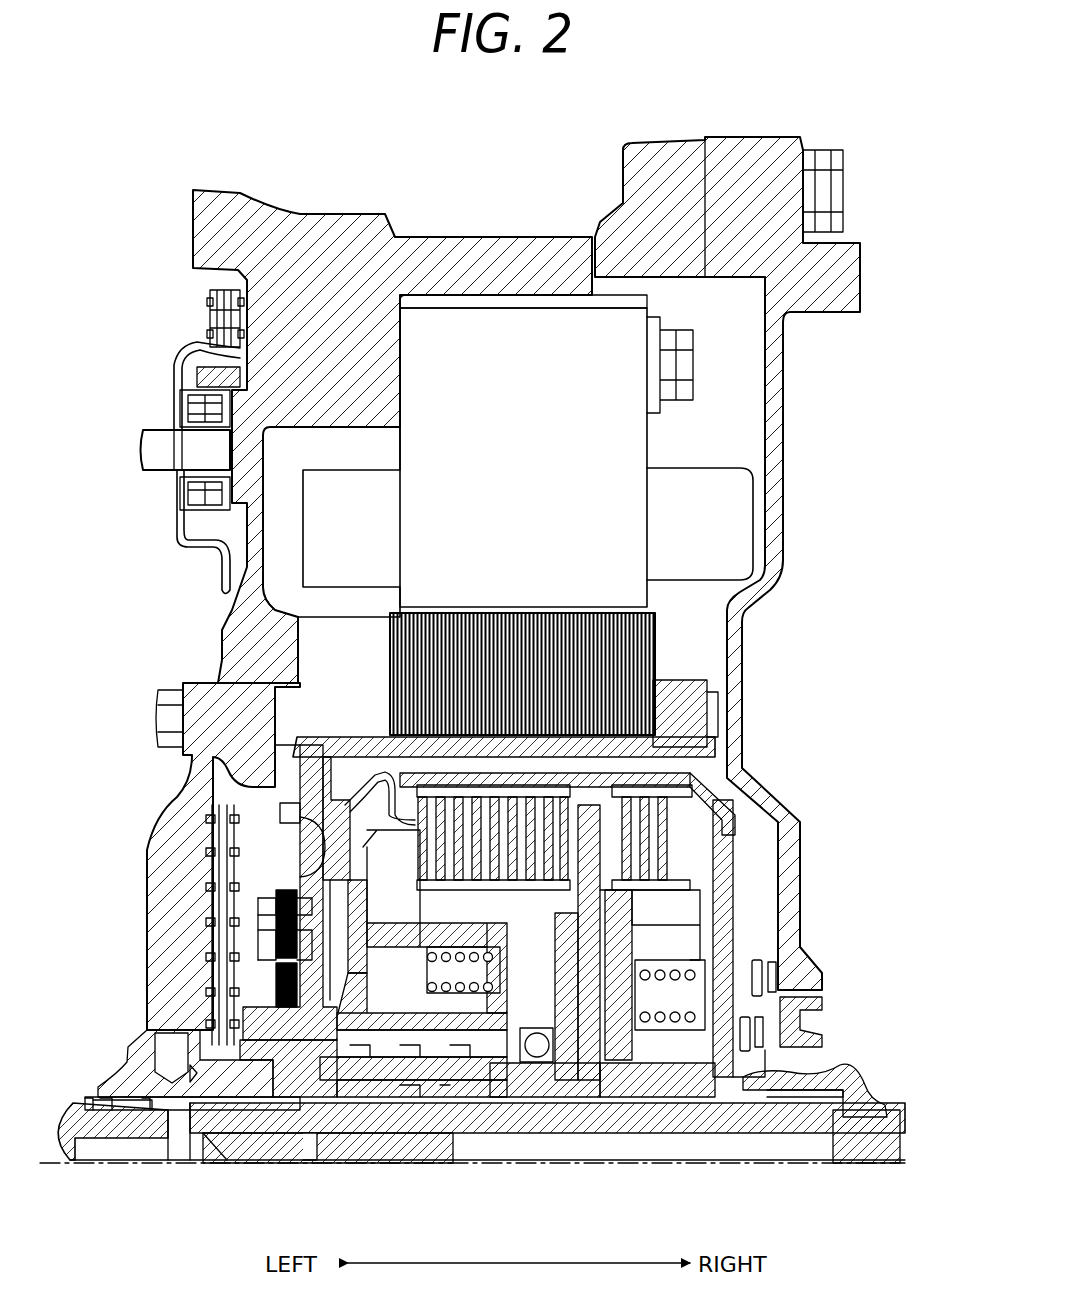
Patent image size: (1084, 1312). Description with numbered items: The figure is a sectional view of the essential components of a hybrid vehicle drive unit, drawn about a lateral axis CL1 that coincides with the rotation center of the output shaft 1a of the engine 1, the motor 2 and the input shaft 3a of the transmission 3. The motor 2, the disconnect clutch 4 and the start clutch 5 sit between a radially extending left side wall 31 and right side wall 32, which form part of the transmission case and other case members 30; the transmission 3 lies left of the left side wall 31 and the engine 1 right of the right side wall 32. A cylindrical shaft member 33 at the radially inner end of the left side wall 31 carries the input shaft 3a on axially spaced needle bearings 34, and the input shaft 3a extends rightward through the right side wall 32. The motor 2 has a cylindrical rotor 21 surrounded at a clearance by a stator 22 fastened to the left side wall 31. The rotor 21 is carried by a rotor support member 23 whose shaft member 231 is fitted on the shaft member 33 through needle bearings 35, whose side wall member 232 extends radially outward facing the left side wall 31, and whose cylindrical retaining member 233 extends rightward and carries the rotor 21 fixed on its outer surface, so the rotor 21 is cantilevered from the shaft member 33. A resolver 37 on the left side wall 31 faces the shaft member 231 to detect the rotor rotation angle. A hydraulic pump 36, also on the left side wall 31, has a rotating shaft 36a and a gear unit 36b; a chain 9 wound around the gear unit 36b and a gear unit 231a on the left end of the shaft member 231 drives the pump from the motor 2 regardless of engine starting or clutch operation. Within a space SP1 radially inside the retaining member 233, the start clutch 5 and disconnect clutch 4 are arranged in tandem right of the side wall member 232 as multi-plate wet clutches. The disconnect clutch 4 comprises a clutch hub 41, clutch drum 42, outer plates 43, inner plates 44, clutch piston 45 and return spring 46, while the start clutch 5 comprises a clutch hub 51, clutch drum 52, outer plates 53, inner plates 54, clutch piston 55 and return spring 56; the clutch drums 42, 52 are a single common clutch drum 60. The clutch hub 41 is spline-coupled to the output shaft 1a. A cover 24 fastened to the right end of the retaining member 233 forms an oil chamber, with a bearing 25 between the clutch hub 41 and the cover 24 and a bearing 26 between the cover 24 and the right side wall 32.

The engine 1 is at (892, 695).
The output shaft 1a is at (835, 1080).
The motor 2 is at (727, 563).
The transmission 3 is at (102, 697).
The input shaft 3a is at (225, 1143).
The disconnect clutch 4 is at (727, 812).
The start clutch 5 is at (385, 763).
The chain 9 is at (200, 893).
The rotor 21 is at (657, 657).
The stator 22 is at (655, 432).
The rotor support member 23 is at (265, 925).
The cover 24 is at (802, 880).
The bearing 25 is at (795, 1032).
The bearing 26 is at (772, 976).
The case members 30 is at (463, 232).
The left side wall 31 is at (235, 660).
The right side wall 32 is at (786, 514).
The shaft member 33 is at (368, 1097).
The bearings 34 is at (120, 1105).
The bearings 35 is at (273, 1093).
The hydraulic pump 36 is at (140, 425).
The rotating shaft 36a is at (180, 480).
The gear unit 36b is at (215, 583).
The resolver 37 is at (255, 948).
The clutch hub 41 is at (745, 925).
The clutch drum 42 is at (565, 770).
The outer plates 43 is at (702, 800).
The inner plates 44 is at (668, 838).
The clutch piston 45 is at (622, 1025).
The return spring 46 is at (652, 1040).
The clutch hub 51 is at (578, 1010).
The clutch drum 52 is at (522, 666).
The outer plates 53 is at (398, 700).
The inner plates 54 is at (552, 835).
The clutch piston 55 is at (393, 1037).
The return spring 56 is at (460, 1030).
The common clutch drum 60 is at (522, 645).
The shaft member 231 is at (292, 1050).
The gear unit 231a is at (253, 1040).
The side wall member 232 is at (335, 955).
The retaining member 233 is at (570, 748).
The space SP1 is at (738, 825).
The axis CL1 is at (498, 1164).